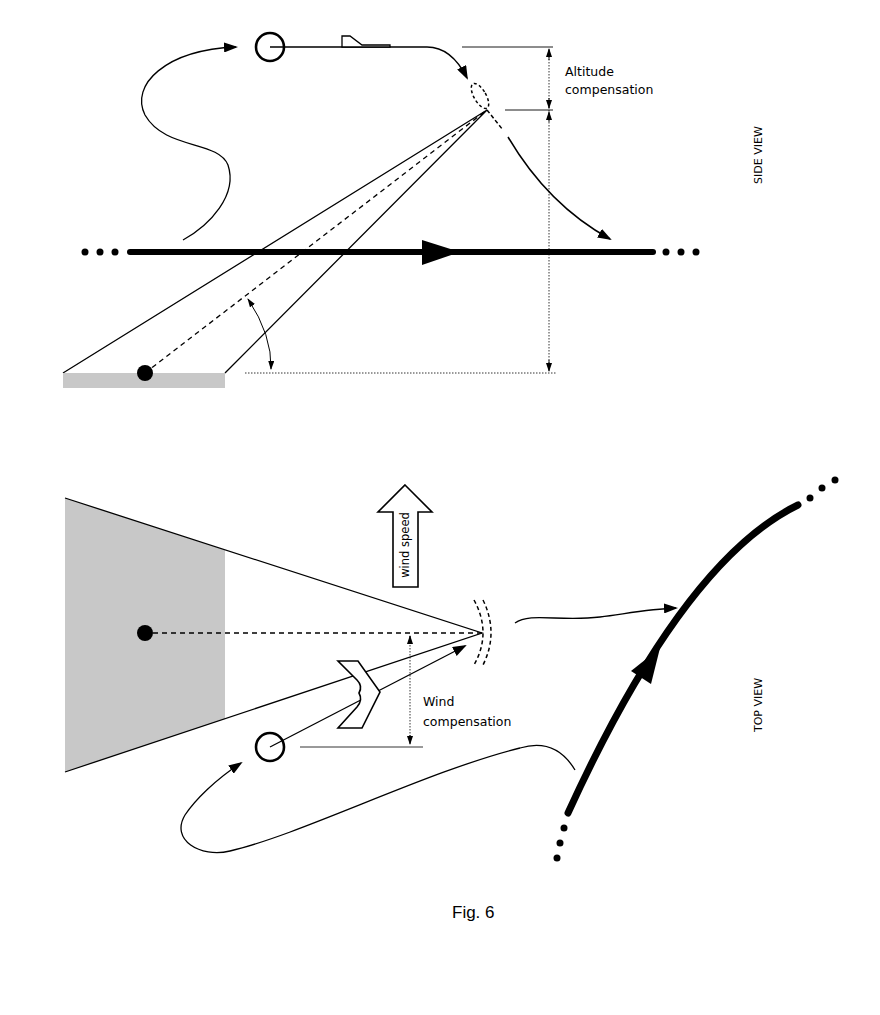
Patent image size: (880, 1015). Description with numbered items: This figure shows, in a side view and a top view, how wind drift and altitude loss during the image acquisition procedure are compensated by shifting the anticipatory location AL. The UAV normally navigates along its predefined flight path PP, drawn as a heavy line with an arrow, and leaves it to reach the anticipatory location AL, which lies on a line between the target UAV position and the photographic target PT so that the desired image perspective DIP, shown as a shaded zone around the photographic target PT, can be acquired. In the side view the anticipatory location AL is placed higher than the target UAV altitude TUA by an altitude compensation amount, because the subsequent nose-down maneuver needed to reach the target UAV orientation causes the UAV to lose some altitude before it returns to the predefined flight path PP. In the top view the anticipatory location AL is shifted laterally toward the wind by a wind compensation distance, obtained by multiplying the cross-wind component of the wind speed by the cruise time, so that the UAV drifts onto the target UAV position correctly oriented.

The anticipatory location AL is at (277, 400).
The target UAV altitude TUA is at (570, 241).
The predefined flight path PP is at (726, 567).
The photographic target PT is at (309, 492).
The desired image perspective DIP is at (225, 389).